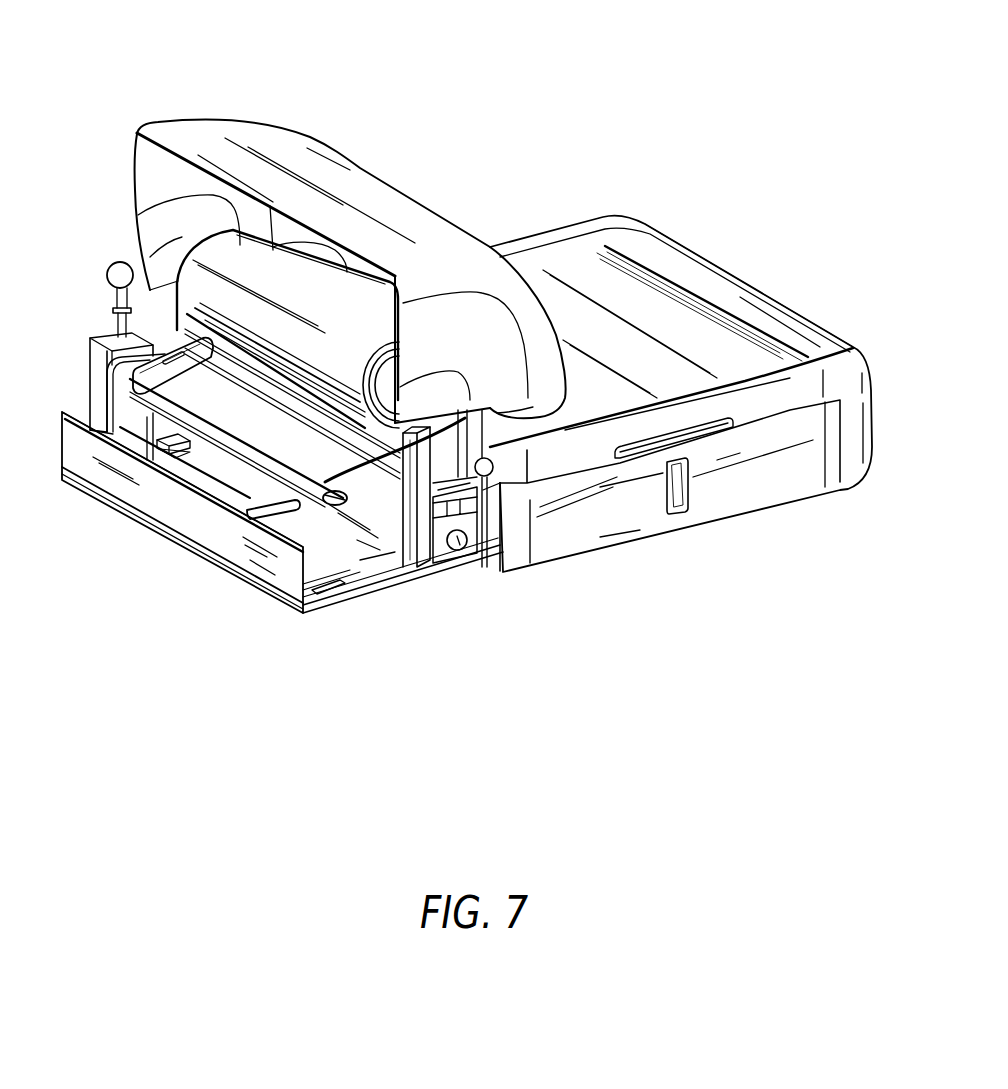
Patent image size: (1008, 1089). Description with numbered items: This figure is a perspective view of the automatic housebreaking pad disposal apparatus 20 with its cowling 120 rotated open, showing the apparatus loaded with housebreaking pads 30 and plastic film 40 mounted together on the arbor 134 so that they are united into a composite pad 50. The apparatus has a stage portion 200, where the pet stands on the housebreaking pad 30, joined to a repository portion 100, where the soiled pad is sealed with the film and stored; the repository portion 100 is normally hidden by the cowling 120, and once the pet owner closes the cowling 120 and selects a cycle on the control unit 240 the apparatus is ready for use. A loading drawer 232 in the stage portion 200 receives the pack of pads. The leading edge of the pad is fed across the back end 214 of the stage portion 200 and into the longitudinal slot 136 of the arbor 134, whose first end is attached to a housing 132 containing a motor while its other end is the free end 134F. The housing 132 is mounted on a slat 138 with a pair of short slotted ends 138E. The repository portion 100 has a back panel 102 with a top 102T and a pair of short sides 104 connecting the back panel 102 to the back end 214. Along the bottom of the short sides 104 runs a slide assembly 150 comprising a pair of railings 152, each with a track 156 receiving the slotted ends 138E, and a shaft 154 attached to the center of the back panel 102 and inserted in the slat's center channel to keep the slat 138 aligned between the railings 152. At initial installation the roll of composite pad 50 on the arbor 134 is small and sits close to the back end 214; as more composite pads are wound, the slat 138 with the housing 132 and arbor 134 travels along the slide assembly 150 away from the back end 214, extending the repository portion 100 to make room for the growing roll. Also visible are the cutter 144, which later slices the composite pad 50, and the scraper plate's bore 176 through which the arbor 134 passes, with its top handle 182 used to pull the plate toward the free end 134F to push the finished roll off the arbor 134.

The automatic housebreaking pad disposal apparatus 20 is at (633, 210).
The housebreaking pad 30 is at (626, 356).
The plastic film 40 is at (217, 237).
The composite pad 50 is at (318, 465).
The repository portion 100 is at (137, 361).
The back panel 102 is at (172, 512).
The top of back panel 102T is at (133, 440).
The short sides 104 is at (303, 620).
The cowling 120 is at (283, 143).
The housing 132 is at (93, 357).
The arbor 134 is at (297, 492).
The free end 134F is at (393, 560).
The longitudinal slot 136 is at (343, 500).
The slat 138 is at (318, 585).
The slotted ends 138E is at (343, 583).
The cutter 144 is at (187, 328).
The slide assembly 150 is at (160, 467).
The railings 152 is at (180, 445).
The shaft 154 is at (288, 497).
The track 156 is at (203, 463).
The bore 176 is at (112, 393).
The top handle 182 is at (173, 370).
The stage portion 200 is at (652, 394).
The back end 214 is at (413, 580).
The loading drawer 232 is at (763, 487).
The control unit 240 is at (460, 541).